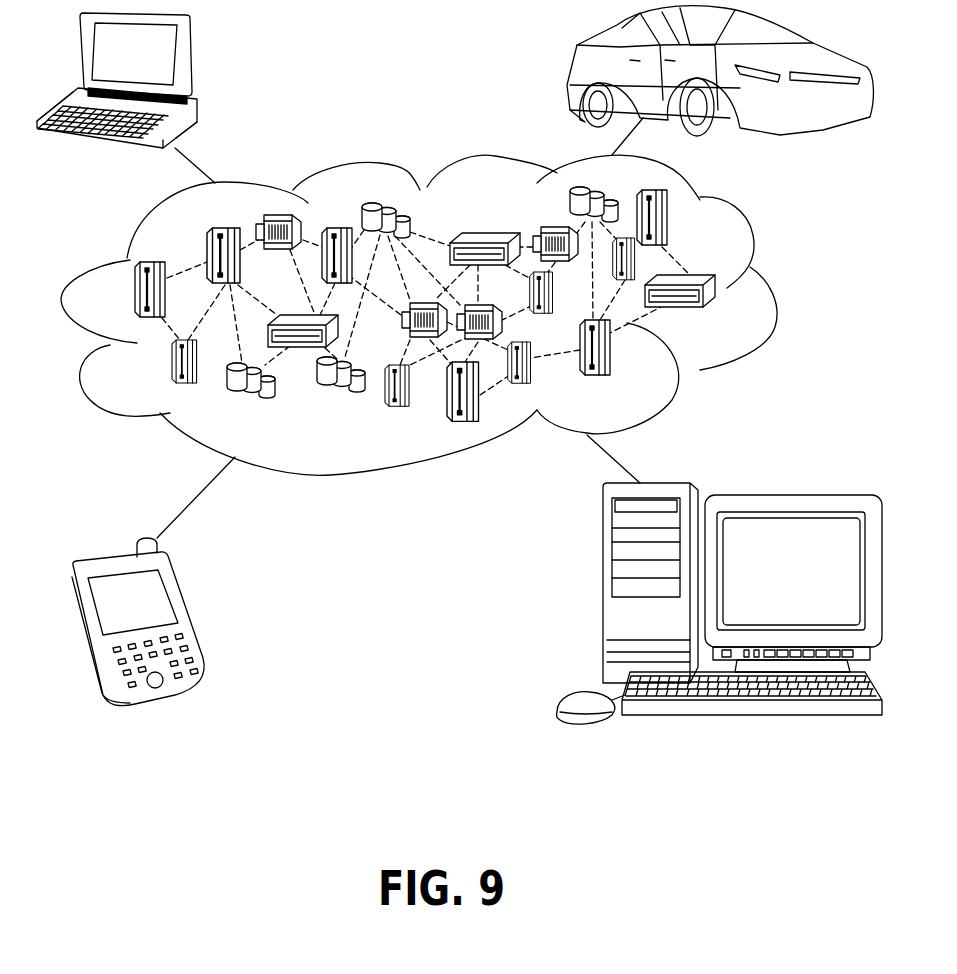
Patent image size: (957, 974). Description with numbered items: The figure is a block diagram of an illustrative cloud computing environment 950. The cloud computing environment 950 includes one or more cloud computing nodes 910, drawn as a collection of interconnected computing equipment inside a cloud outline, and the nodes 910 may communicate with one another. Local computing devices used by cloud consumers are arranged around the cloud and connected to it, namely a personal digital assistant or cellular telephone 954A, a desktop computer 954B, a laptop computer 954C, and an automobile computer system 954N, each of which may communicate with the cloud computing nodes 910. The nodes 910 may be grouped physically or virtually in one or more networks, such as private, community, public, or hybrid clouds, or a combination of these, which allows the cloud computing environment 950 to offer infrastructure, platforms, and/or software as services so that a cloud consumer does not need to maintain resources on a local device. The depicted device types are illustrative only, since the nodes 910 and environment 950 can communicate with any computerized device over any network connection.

The cloud computing environment 950 is at (753, 251).
The cloud computing nodes 910 is at (732, 310).
The personal digital assistant (PDA) or cellular telephone 954A is at (187, 612).
The desktop computer 954B is at (603, 595).
The laptop computer 954C is at (193, 58).
The automobile computer system 954N is at (575, 60).